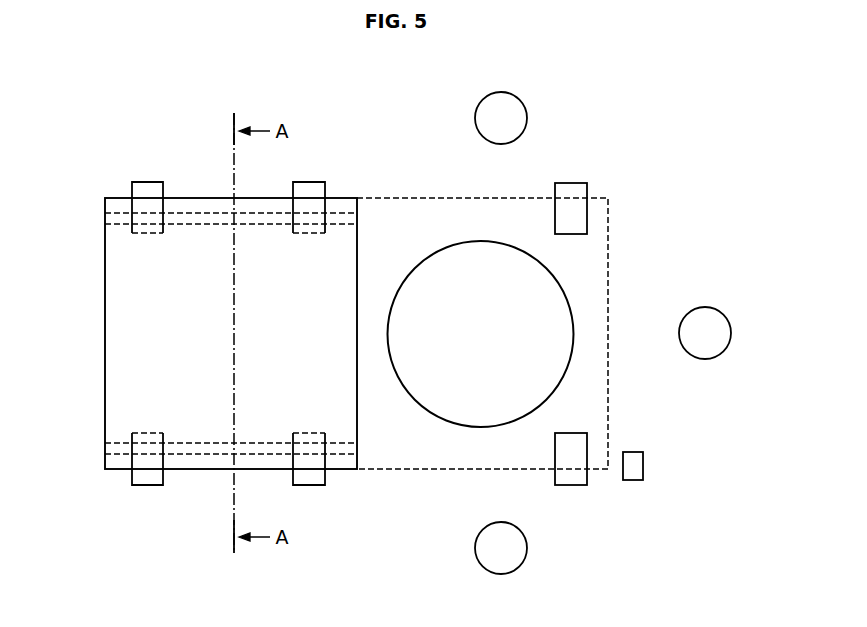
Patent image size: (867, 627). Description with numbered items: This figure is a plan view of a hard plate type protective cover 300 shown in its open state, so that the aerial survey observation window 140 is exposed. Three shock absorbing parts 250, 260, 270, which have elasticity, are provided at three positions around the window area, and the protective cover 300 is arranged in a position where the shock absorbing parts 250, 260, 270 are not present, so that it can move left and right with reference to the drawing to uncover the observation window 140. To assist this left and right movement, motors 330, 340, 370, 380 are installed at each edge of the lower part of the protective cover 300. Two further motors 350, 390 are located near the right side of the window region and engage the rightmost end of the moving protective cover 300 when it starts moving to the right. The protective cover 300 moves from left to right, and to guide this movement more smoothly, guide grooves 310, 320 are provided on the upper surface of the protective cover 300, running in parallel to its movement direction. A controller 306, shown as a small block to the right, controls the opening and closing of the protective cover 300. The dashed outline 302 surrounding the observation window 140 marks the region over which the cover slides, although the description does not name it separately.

The aerial survey observation window 140 is at (531, 350).
The shock absorbing part 250 is at (483, 120).
The shock absorbing part 260 is at (483, 548).
The shock absorbing part 270 is at (715, 350).
The hard plate type protective cover 300 is at (130, 297).
The mounting region 302 is at (590, 254).
The controller 306 is at (643, 464).
The guide groove 310 is at (195, 447).
The guide groove 320 is at (192, 218).
The motor 330 is at (143, 480).
The motor 340 is at (317, 479).
The motor 350 is at (575, 477).
The motor 370 is at (143, 190).
The motor 380 is at (318, 188).
The motor 390 is at (572, 188).